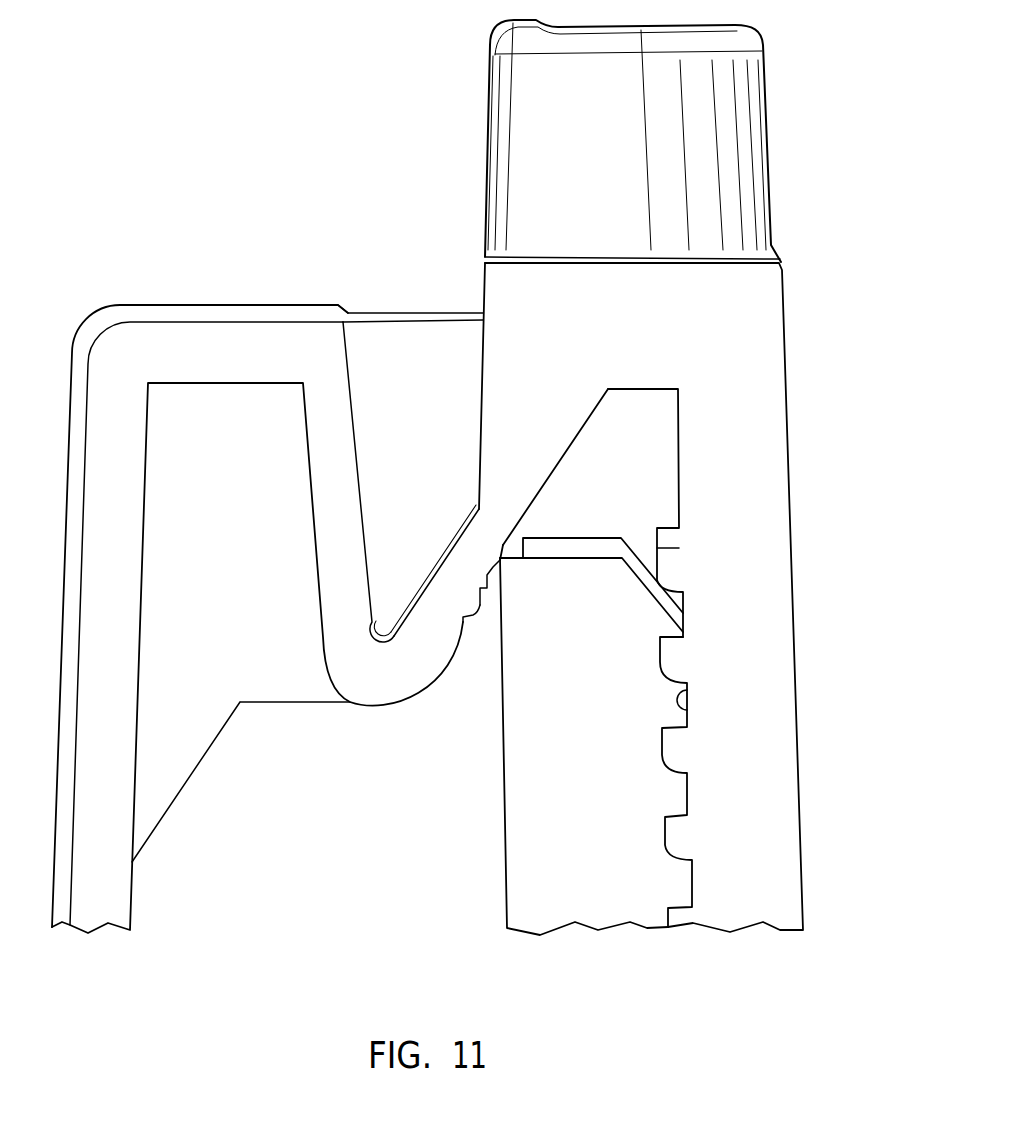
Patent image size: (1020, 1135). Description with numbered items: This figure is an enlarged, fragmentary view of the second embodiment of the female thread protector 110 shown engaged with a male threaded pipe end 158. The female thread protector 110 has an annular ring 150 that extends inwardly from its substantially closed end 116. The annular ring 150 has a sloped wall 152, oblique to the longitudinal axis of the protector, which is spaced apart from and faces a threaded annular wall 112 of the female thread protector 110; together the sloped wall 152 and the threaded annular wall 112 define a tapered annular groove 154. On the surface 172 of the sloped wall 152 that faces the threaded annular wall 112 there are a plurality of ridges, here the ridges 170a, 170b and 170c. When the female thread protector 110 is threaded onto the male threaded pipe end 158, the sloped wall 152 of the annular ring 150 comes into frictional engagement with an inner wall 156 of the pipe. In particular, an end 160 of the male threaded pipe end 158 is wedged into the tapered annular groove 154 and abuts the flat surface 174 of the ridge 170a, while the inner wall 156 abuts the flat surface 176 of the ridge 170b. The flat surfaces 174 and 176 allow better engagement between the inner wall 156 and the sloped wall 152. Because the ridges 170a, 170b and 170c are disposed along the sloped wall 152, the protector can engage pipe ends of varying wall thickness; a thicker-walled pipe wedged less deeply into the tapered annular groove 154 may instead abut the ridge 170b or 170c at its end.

The female thread protector 110 is at (822, 170).
The threaded annular wall 112 is at (688, 707).
The substantially closed end 116 is at (258, 304).
The annular ring 150 is at (327, 493).
The sloped wall 152 is at (503, 560).
The tapered annular groove 154 is at (643, 418).
The inner wall 156 is at (506, 830).
The male threaded pipe end 158 is at (617, 747).
The end 160 is at (600, 550).
The ridge 170a is at (508, 543).
The ridge 170b is at (490, 576).
The ridge 170c is at (470, 608).
The surface 172 is at (560, 468).
The flat surface 174 is at (467, 553).
The flat surface 176 is at (503, 560).